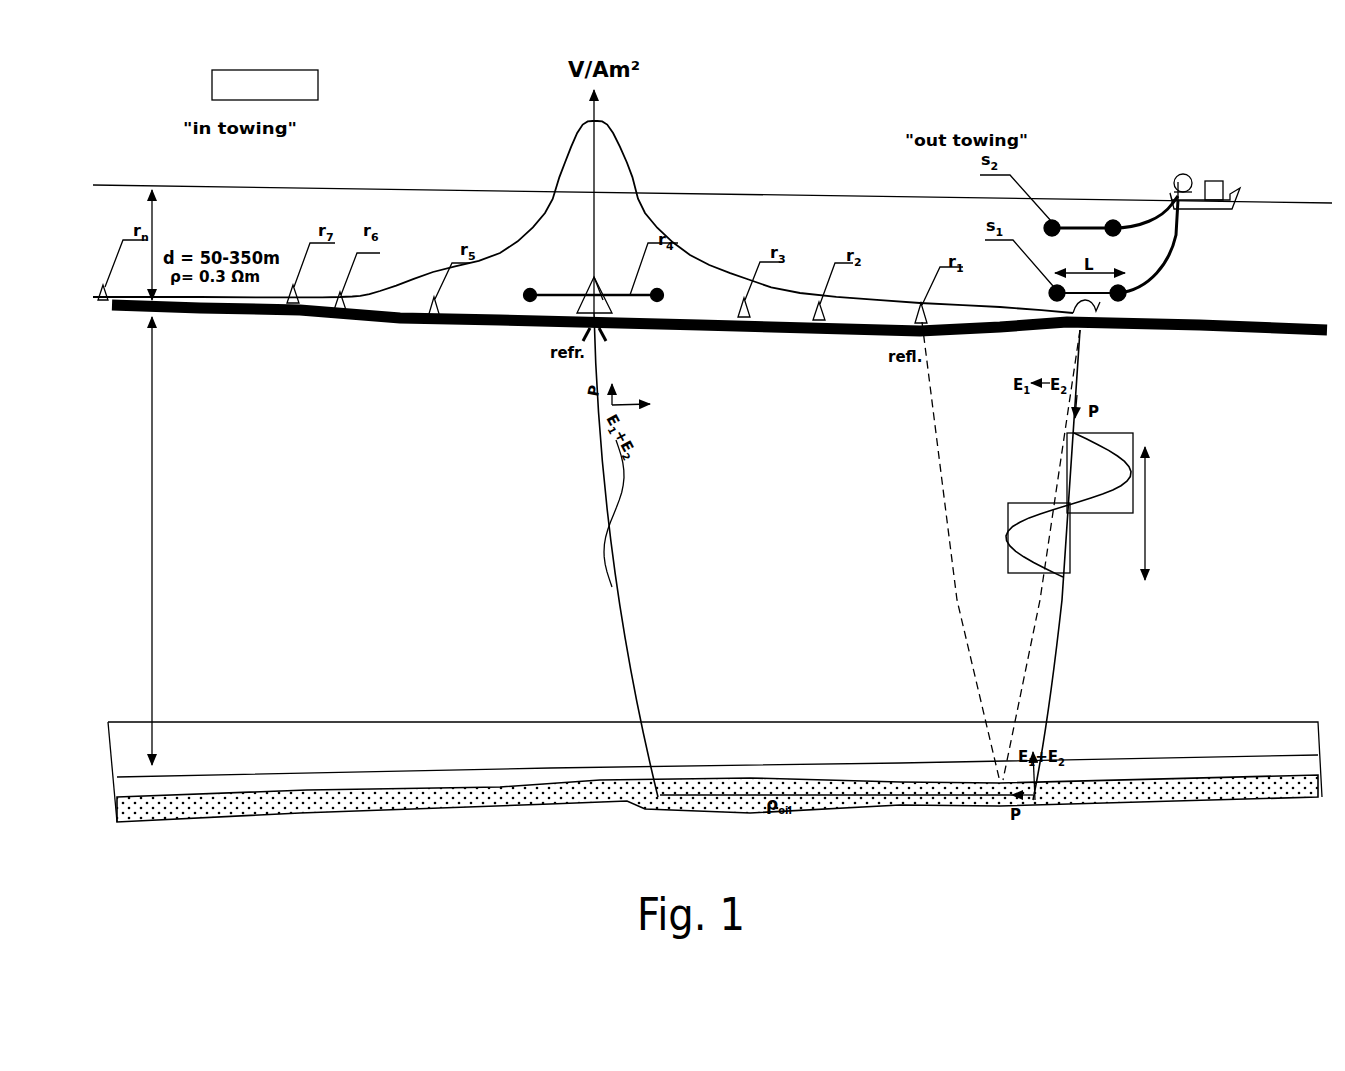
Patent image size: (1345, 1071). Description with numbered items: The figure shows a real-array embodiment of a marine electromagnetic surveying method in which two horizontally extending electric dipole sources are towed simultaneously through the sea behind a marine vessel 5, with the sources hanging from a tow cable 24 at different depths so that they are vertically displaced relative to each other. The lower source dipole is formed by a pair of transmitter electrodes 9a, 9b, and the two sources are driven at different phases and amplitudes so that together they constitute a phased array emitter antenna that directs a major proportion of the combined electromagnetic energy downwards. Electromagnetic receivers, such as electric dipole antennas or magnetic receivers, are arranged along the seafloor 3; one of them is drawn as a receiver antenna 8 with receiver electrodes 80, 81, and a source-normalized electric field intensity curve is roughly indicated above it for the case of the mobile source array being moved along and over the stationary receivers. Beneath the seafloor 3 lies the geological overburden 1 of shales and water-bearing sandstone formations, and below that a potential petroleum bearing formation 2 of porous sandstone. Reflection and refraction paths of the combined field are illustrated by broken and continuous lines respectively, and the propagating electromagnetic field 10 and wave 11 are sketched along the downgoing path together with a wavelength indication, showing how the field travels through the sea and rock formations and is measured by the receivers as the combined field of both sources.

The geological overburden 1 is at (188, 481).
The potential petroleum bearing formation 2 is at (715, 776).
The seafloor 3 is at (719, 294).
The survey vessel 5 is at (1211, 163).
The receiver antenna 8 is at (632, 333).
The receiver electrode 80 is at (632, 333).
The receiver electrode 81 is at (632, 333).
The transmitter electrode 9a is at (1041, 295).
The transmitter electrode 9b is at (1134, 296).
The electromagnetic field 10 is at (1081, 506).
The electromagnetic wave 11 is at (1081, 506).
The tow cable 24 is at (1178, 182).